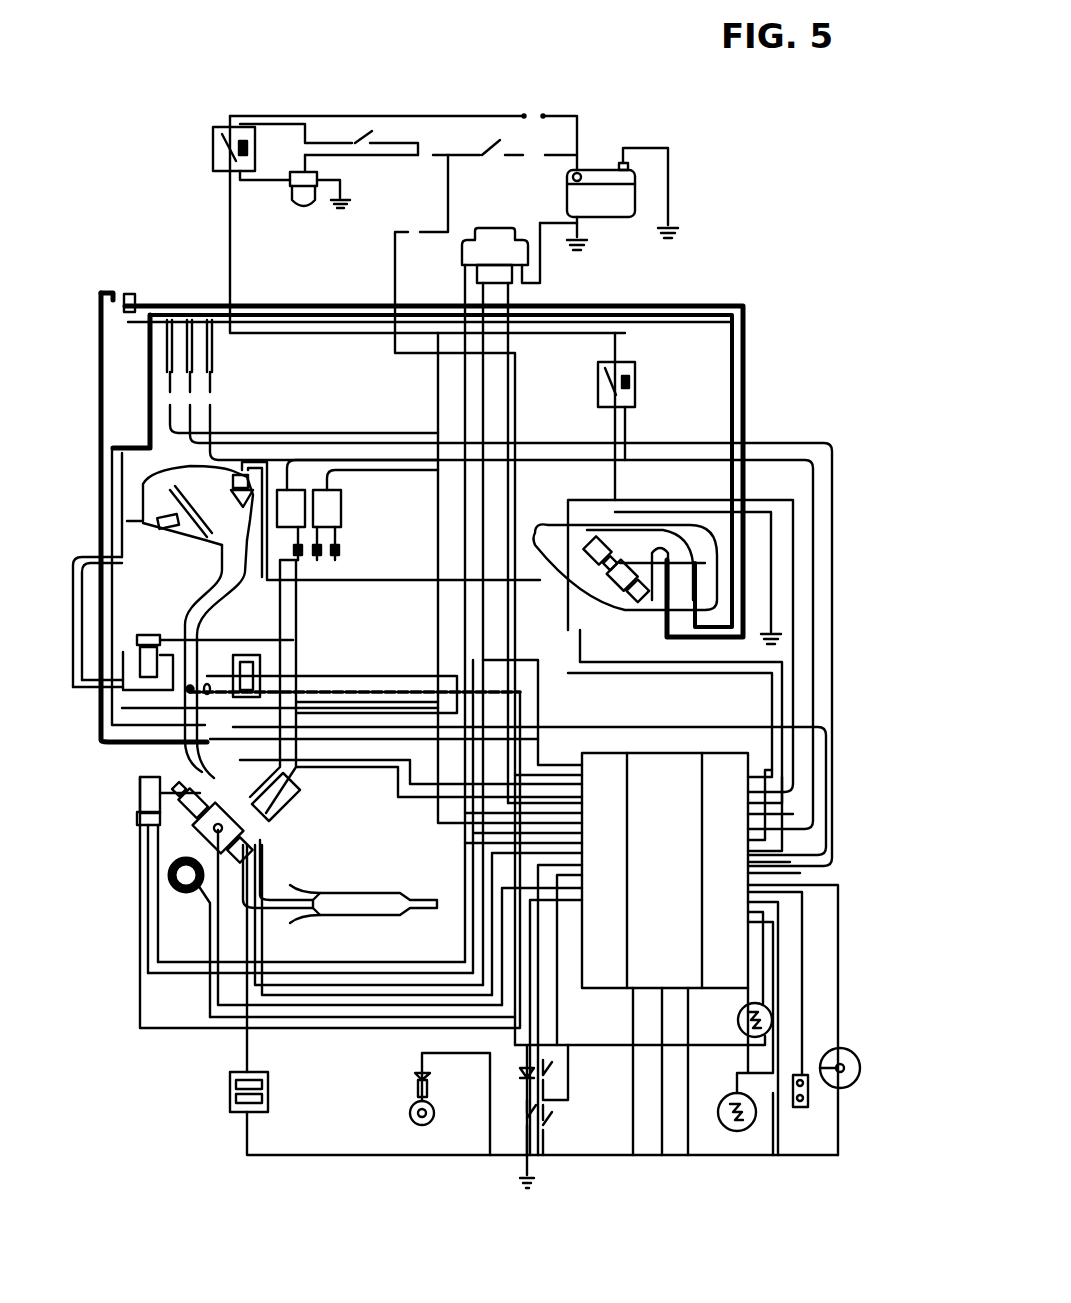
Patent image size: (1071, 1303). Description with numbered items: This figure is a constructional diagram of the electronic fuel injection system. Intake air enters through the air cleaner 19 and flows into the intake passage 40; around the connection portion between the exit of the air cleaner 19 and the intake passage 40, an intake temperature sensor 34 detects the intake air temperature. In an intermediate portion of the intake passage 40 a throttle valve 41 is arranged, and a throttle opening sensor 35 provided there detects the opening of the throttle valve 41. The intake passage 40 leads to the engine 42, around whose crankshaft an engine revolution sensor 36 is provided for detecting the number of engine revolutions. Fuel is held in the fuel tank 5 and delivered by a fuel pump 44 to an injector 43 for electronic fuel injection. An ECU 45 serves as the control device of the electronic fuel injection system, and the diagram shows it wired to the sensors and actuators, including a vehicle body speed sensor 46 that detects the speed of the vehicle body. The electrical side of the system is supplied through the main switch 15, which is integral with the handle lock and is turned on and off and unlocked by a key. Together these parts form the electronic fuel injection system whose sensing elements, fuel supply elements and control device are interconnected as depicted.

The main switch 15 is at (491, 140).
The air cleaner 19 is at (157, 490).
The intake temperature sensor 34 is at (240, 476).
The intake passage 40 is at (188, 598).
The throttle opening sensor 35 is at (262, 672).
The fuel tank 5 is at (585, 582).
The fuel pump 44 is at (620, 603).
The ECU 45 is at (675, 765).
The throttle valve 41 is at (118, 742).
The injector 43 is at (200, 762).
The engine 42 is at (185, 838).
The engine revolution sensor 36 is at (172, 889).
The vehicle body speed sensor 46 is at (412, 1118).